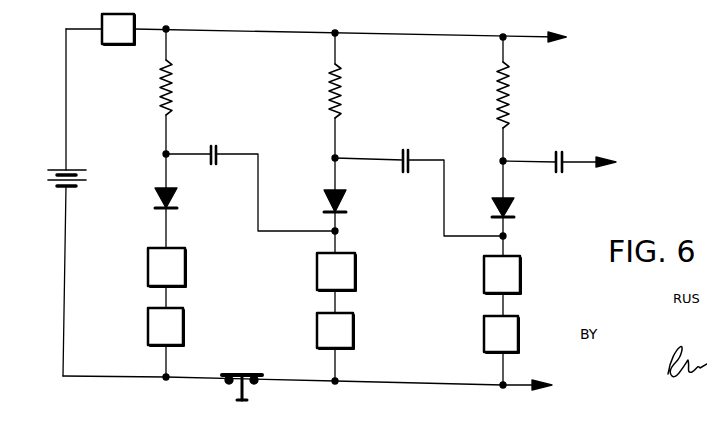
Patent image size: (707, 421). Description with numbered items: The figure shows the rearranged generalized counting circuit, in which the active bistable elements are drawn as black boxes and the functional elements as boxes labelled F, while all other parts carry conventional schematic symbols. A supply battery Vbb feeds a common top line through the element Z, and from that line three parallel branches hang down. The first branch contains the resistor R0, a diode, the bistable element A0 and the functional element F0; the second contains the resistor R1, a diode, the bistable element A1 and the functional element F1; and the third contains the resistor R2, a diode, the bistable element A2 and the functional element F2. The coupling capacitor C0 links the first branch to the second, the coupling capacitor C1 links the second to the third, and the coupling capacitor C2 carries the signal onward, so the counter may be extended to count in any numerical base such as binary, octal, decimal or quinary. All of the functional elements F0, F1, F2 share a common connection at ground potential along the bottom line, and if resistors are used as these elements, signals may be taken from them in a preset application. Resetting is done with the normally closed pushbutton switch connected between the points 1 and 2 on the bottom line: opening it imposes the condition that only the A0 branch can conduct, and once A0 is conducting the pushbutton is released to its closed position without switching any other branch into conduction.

The impedance element Z is at (118, 29).
The supply voltage source Vbb is at (70, 186).
The resistor of the first branch R0 is at (173, 80).
The resistor of the second branch R1 is at (342, 82).
The resistor of the third branch R2 is at (510, 88).
The coupling capacitor of the first branch C0 is at (218, 150).
The coupling capacitor of the second branch C1 is at (410, 156).
The coupling capacitor of the third branch C2 is at (564, 158).
The active bistable element of the first branch A0 is at (167, 267).
The functional element of the first branch F0 is at (166, 327).
The active bistable element of the second branch A1 is at (336, 272).
The functional element of the second branch F1 is at (335, 331).
The active bistable element of the third branch A2 is at (502, 275).
The functional element of the third branch F2 is at (501, 334).
The switch point 1 is at (252, 389).
The switch point 2 is at (236, 389).